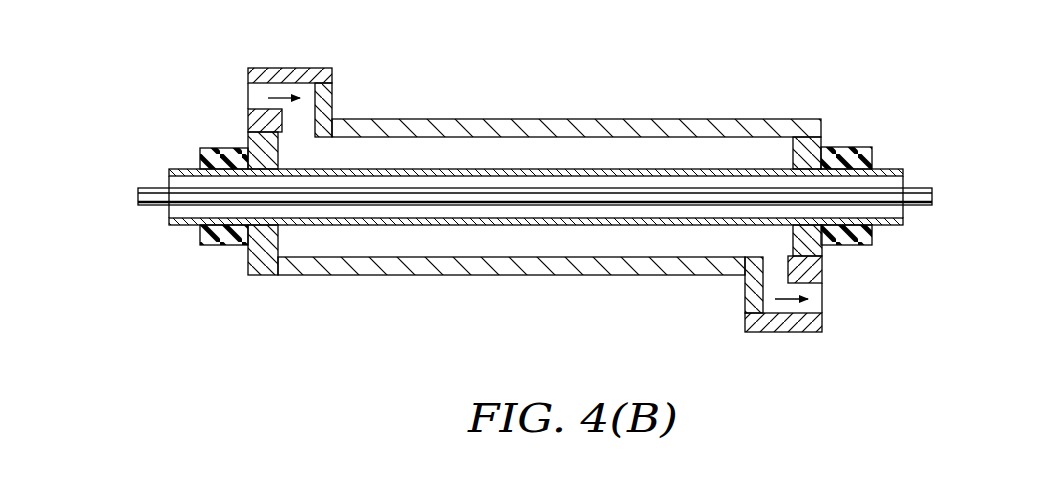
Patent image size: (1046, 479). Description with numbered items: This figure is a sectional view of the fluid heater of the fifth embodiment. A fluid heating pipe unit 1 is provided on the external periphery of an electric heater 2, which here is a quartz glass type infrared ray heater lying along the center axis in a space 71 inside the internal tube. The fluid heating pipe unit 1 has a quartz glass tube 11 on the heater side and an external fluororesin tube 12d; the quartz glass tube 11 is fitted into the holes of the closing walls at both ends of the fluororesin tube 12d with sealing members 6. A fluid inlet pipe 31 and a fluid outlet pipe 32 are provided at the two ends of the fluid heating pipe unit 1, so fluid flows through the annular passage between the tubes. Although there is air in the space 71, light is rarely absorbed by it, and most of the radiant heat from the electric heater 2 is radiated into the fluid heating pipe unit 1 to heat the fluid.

The fluid heating pipe unit 1 is at (753, 114).
The electric heater 2 is at (150, 206).
The sealing members 6 is at (868, 120).
The quartz glass tube 11 is at (496, 169).
The fluororesin tube 12d is at (607, 119).
The fluid inlet pipe 31 is at (248, 93).
The fluid outlet pipe 32 is at (820, 303).
The space 71 is at (169, 180).